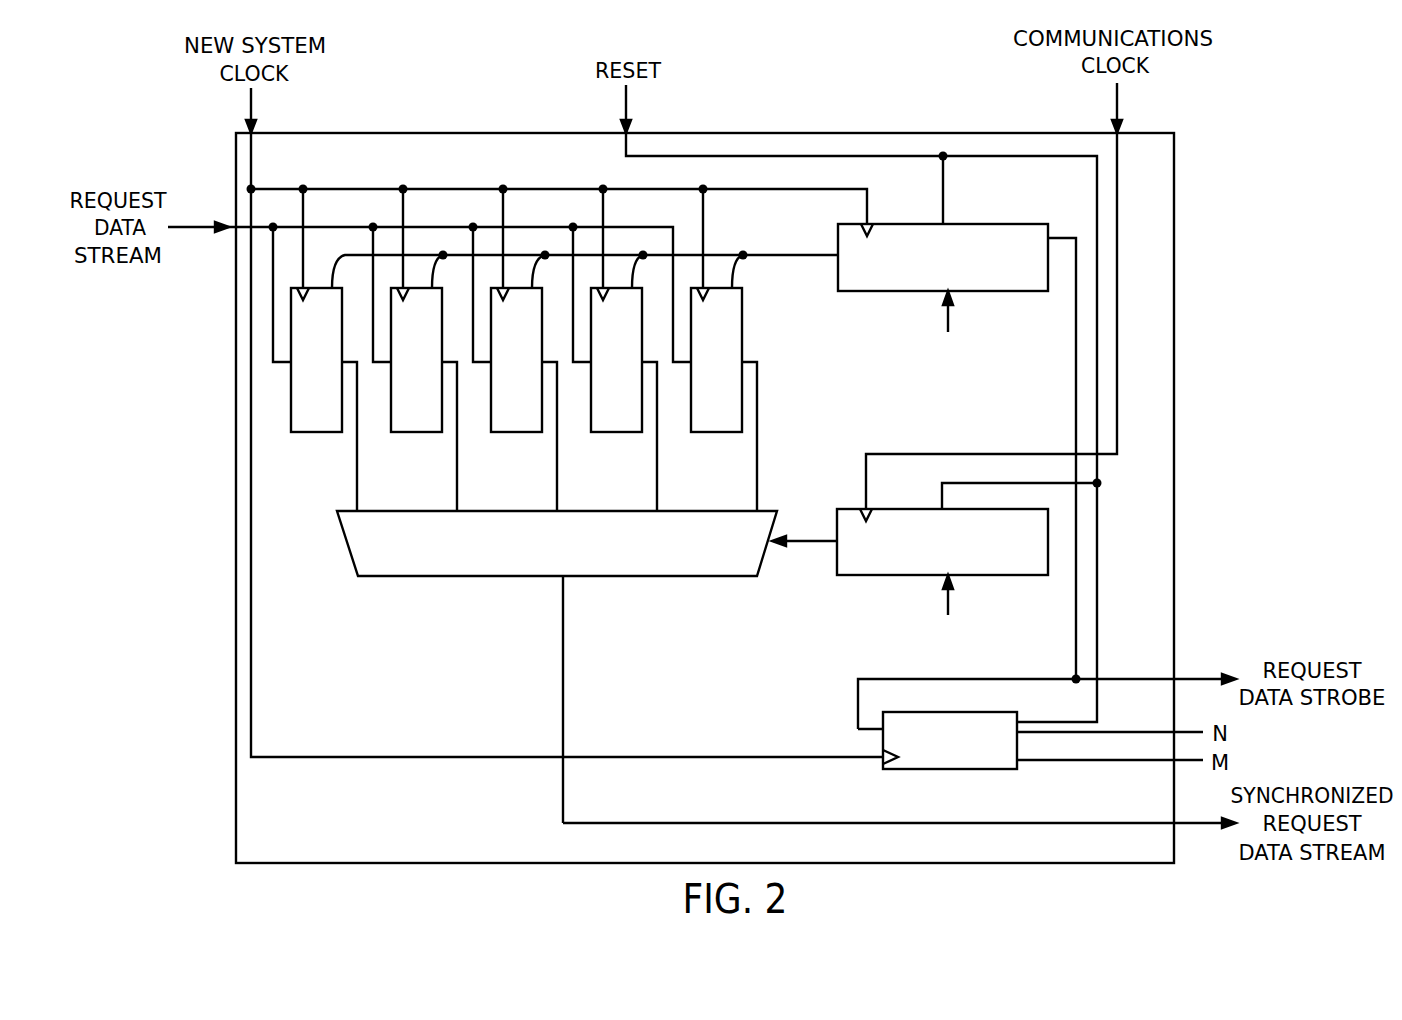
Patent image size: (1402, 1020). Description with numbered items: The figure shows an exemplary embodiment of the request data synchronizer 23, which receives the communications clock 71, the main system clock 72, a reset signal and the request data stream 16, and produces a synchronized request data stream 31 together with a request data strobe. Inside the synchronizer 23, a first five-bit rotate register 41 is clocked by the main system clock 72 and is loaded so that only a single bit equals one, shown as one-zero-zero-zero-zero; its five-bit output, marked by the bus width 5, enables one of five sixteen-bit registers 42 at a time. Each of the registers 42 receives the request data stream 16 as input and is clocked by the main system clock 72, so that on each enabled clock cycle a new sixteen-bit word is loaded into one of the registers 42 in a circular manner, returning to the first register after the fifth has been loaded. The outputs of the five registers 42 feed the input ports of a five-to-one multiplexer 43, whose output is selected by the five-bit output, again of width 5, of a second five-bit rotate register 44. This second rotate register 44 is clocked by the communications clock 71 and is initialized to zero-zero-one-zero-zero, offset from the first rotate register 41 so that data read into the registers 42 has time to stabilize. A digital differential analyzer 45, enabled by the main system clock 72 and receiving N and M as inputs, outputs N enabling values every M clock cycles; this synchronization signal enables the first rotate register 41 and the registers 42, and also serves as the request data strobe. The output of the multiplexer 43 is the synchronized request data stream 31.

The request data synchronizer 23 is at (845, 133).
The main system clock 72 is at (252, 100).
The communications clock 71 is at (1118, 96).
The request data stream 16 is at (178, 235).
The 16-bit registers 42 is at (716, 462).
The 5:1 multiplexer 43 is at (357, 563).
The first 5-bit rotate register 41 is at (990, 228).
The second 5-bit rotate register 44 is at (846, 512).
The 5-bit rotate register bus 5 is at (820, 245).
The digital differential analyzer 45 is at (952, 770).
The synchronized request data stream 31 is at (742, 822).